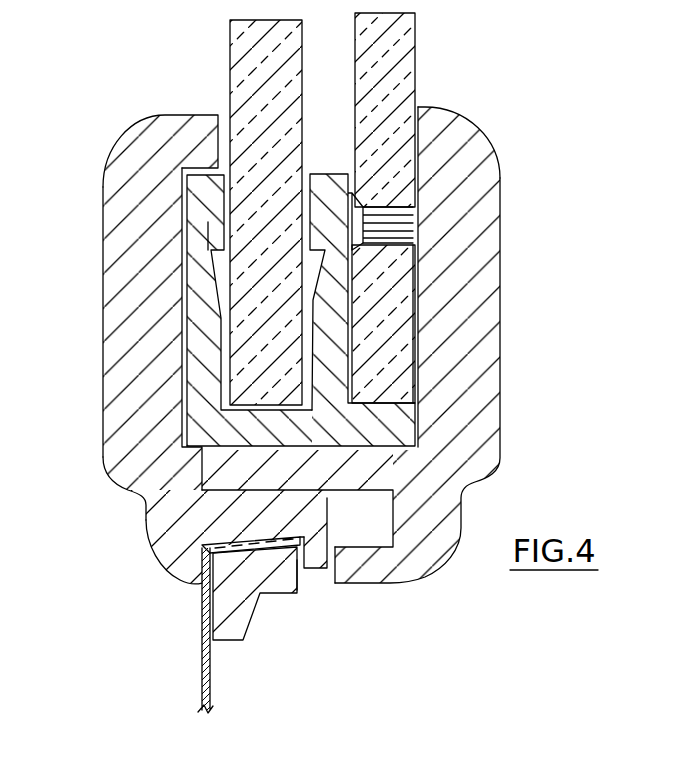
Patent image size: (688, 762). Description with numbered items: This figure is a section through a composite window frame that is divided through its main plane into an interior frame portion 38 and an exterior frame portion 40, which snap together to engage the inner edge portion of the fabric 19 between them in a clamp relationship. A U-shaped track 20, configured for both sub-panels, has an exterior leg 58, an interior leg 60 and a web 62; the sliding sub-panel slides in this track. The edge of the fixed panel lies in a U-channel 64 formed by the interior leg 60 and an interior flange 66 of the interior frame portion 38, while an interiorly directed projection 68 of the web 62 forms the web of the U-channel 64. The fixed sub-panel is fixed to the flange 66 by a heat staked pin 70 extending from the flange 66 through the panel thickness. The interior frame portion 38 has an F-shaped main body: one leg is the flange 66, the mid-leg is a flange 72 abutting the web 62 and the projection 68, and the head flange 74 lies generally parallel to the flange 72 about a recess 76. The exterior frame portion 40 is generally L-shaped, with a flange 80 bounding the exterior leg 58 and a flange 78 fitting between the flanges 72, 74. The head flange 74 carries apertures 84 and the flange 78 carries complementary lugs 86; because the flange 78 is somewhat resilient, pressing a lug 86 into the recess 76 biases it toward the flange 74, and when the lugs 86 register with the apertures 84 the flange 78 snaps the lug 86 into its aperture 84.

The fabric 19 is at (202, 660).
The U-shaped track 20 is at (197, 278).
The interior frame portion 38 is at (480, 160).
The exterior frame portion 40 is at (148, 147).
The exterior leg 58 is at (197, 190).
The interior leg 60 is at (330, 172).
The web 62 is at (275, 453).
The U-channel 64 is at (420, 260).
The interior flange 66 is at (457, 345).
The interiorly directed projection 68 is at (418, 420).
The heat staked pin 70 is at (363, 218).
The flange 72 is at (342, 465).
The head flange 74 is at (276, 578).
The recess 76 is at (362, 535).
The flange 78 is at (265, 522).
The flange 80 is at (135, 322).
The apertures 84 is at (320, 588).
The lugs 86 is at (311, 557).